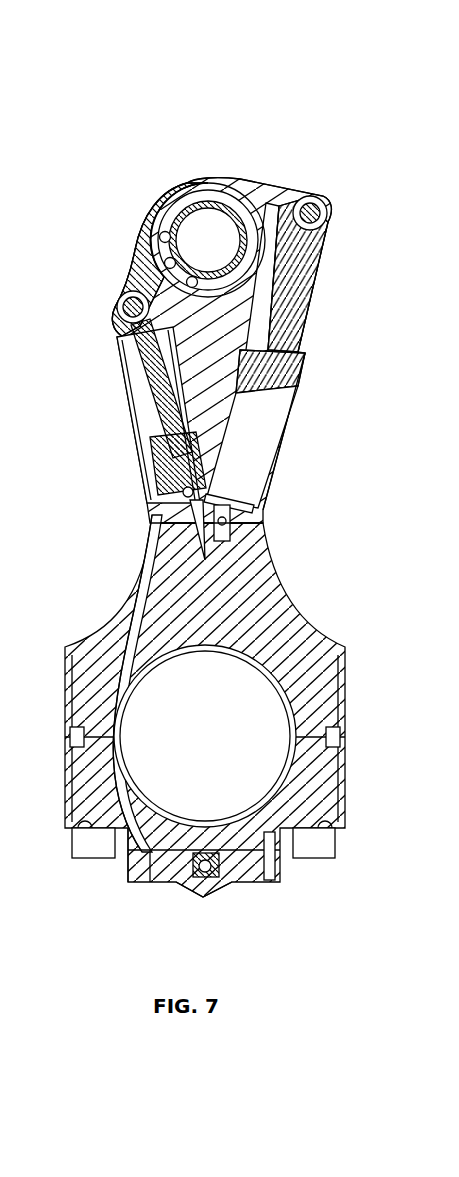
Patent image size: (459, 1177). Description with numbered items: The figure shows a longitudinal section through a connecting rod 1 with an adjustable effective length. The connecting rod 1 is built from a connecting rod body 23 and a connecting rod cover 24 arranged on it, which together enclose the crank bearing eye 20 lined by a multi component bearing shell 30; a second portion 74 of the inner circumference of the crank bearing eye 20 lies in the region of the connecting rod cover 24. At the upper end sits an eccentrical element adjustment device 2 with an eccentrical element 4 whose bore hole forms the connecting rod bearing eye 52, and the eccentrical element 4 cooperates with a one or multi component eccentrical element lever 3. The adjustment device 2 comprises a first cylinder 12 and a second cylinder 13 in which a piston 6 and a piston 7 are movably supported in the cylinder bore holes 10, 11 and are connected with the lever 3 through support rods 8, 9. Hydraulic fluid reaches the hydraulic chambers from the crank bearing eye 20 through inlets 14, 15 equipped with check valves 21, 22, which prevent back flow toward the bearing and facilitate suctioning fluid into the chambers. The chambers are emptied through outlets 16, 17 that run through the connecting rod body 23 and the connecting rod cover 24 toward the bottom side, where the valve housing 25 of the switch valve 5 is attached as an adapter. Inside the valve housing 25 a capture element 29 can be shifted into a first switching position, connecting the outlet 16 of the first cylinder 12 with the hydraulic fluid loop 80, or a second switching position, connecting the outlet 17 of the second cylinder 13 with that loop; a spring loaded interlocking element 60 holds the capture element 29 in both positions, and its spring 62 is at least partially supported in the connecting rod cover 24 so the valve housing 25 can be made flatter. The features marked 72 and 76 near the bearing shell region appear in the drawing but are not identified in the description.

The connecting rod 1 is at (326, 138).
The eccentrical element adjustment device 2 is at (116, 166).
The eccentrical element lever 3 is at (282, 200).
The eccentrical element 4 is at (163, 172).
The connecting rod bearing eye 52 is at (207, 227).
The support rod 9 is at (302, 303).
The support rod 8 is at (137, 362).
The first cylinder 12 is at (120, 392).
The cylinder bore hole 10 is at (145, 410).
The piston 6 is at (137, 462).
The piston 7 is at (297, 393).
The cylinder bore hole 11 is at (250, 425).
The second cylinder 13 is at (282, 462).
The check valve 22 is at (265, 510).
The outlet 17 is at (263, 528).
The inlet 15 is at (262, 563).
The check valve 21 is at (160, 492).
The outlet 16 is at (148, 510).
The inlet 14 is at (193, 535).
The connecting rod body 23 is at (317, 637).
The connecting rod cover 24 is at (340, 820).
The crank bearing eye 20 is at (272, 751).
The bearing shell 30 is at (204, 652).
The bearing shell 72 is at (245, 655).
The oil supply channel 76 is at (160, 663).
The second portion 74 is at (153, 813).
The spring 62 is at (202, 845).
The hydraulic fluid loop 80 is at (78, 856).
The valve housing 25 is at (148, 878).
The switch valve 5 is at (176, 890).
The capture element 29 is at (203, 900).
The interlocking element 60 is at (223, 890).